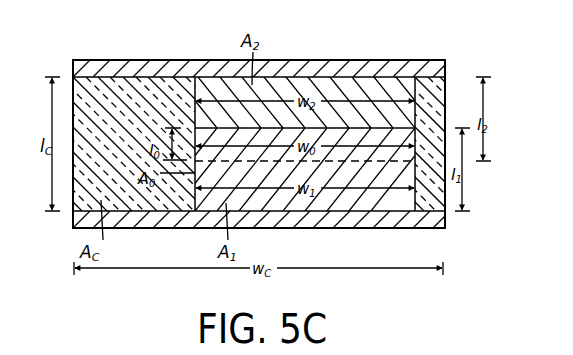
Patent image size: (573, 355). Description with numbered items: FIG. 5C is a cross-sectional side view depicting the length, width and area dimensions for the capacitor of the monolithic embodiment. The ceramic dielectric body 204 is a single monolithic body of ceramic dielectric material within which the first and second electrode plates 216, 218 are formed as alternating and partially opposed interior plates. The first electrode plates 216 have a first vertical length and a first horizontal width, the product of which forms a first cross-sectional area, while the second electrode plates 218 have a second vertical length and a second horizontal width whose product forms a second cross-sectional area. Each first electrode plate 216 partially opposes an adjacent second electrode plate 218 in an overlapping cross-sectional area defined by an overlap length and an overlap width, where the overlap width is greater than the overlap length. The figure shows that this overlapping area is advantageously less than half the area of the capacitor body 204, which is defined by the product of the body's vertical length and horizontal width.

The ceramic dielectric body 204 is at (128, 88).
The first electrode plates 216 is at (377, 205).
The second electrode plates 218 is at (357, 87).